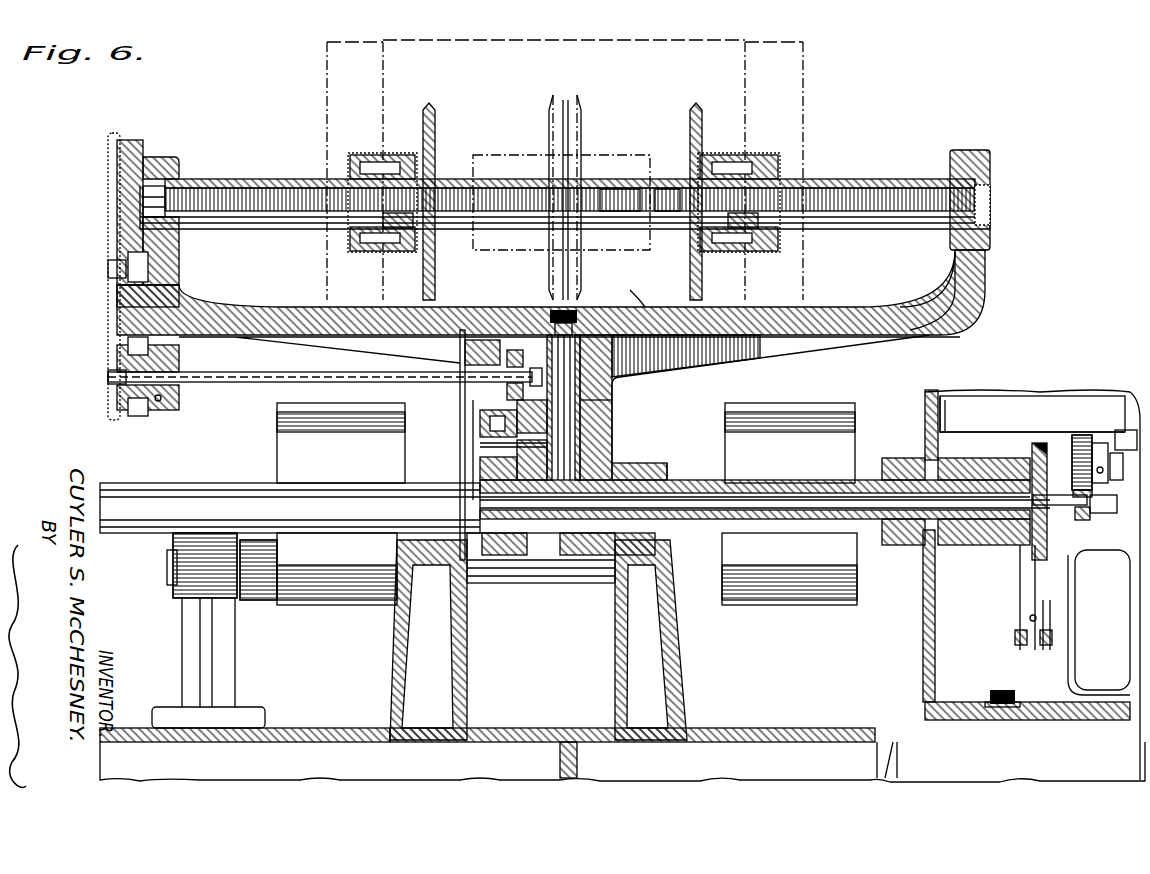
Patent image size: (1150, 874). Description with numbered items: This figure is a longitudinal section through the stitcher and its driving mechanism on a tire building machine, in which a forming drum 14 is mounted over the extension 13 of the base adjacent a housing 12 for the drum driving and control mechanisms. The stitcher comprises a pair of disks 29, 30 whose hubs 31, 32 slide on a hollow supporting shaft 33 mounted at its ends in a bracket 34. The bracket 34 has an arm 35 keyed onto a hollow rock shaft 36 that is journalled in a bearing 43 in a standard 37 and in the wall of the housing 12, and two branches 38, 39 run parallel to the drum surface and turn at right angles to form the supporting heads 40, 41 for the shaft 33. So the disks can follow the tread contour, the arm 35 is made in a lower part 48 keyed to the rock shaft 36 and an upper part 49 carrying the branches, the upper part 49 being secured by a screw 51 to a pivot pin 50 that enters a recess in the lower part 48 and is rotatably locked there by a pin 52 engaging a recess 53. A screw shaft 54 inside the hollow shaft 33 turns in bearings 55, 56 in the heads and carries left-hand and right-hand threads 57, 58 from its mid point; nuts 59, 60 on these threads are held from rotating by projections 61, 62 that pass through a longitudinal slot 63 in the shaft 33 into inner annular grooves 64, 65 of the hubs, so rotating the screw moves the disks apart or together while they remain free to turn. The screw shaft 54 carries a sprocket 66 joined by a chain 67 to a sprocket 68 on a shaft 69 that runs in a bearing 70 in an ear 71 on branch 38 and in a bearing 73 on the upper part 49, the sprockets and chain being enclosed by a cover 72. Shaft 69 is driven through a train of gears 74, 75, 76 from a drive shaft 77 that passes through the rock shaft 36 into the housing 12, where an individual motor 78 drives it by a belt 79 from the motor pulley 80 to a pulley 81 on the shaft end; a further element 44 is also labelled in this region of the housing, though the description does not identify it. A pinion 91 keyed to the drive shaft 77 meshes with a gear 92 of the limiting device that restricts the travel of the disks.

The housing 12 is at (925, 398).
The extension 13 is at (525, 728).
The forming drum 14 is at (327, 97).
The stitcher disk 29 is at (430, 103).
The stitcher disk 30 is at (582, 100).
The hub 31 is at (365, 155).
The hub 32 is at (750, 160).
The hollow supporting shaft 33 is at (500, 179).
The bracket 34 is at (645, 300).
The arm 35 is at (614, 412).
The rock shaft 36 is at (690, 480).
The standard 37 is at (680, 640).
The branch 38 is at (270, 307).
The branch 39 is at (850, 307).
The supporting head 40 is at (179, 256).
The supporting head 41 is at (955, 256).
The bearing 43 is at (670, 470).
The lever arm 44 is at (1020, 605).
The lower part 48 is at (614, 462).
The upper part 49 is at (614, 386).
The pivot pin 50 is at (552, 333).
The screw 51 is at (580, 333).
The pin 52 is at (525, 495).
The recess 53 is at (600, 455).
The screw shaft 54 is at (612, 181).
The bearing 55 is at (179, 172).
The bearing 56 is at (990, 168).
The left-hand screw thread 57 is at (455, 186).
The right-hand screw thread 58 is at (650, 181).
The nut 59 is at (383, 223).
The nut 60 is at (758, 223).
The projection 61 is at (375, 243).
The projection 62 is at (735, 243).
The longitudinal slot 63 is at (520, 222).
The inner annular groove 64 is at (395, 162).
The inner annular groove 65 is at (722, 162).
The sprocket 66 is at (140, 185).
The chain 67 is at (108, 272).
The sprocket 68 is at (120, 375).
The shaft 69 is at (275, 372).
The bearing 70 is at (179, 404).
The ear 71 is at (179, 352).
The cover 72 is at (160, 200).
The bearing 73 is at (550, 316).
The gear 74 is at (460, 398).
The gear 75 is at (480, 422).
The gear 76 is at (473, 470).
The drive shaft 77 is at (762, 533).
The motor 78 is at (1075, 686).
The belt 79 is at (1035, 575).
The pulley 80 is at (1040, 648).
The pulley 81 is at (1032, 555).
The pinion 91 is at (1082, 520).
The gear 92 is at (1085, 435).